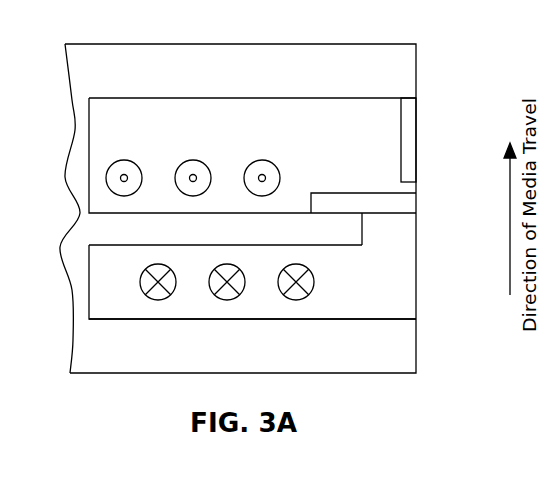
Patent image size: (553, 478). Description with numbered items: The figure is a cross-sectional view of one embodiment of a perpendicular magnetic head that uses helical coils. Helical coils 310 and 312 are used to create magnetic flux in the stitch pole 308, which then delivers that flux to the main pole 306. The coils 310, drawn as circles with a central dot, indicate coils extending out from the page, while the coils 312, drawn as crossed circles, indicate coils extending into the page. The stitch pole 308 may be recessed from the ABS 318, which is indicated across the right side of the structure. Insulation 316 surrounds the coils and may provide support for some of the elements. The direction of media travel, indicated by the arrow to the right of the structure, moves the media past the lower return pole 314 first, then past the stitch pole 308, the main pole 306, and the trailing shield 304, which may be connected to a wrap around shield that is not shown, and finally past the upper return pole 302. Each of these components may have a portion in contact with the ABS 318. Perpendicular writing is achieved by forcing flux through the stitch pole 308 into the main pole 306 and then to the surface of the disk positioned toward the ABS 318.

The upper return pole 302 is at (325, 81).
The trailing shield 304 is at (417, 144).
The main pole 306 is at (417, 198).
The stitch pole 308 is at (271, 240).
The helical coils 310 is at (127, 159).
The helical coils 312 is at (141, 287).
The lower return pole 314 is at (271, 356).
The insulation 316 is at (364, 153).
The ABS 318 is at (420, 63).